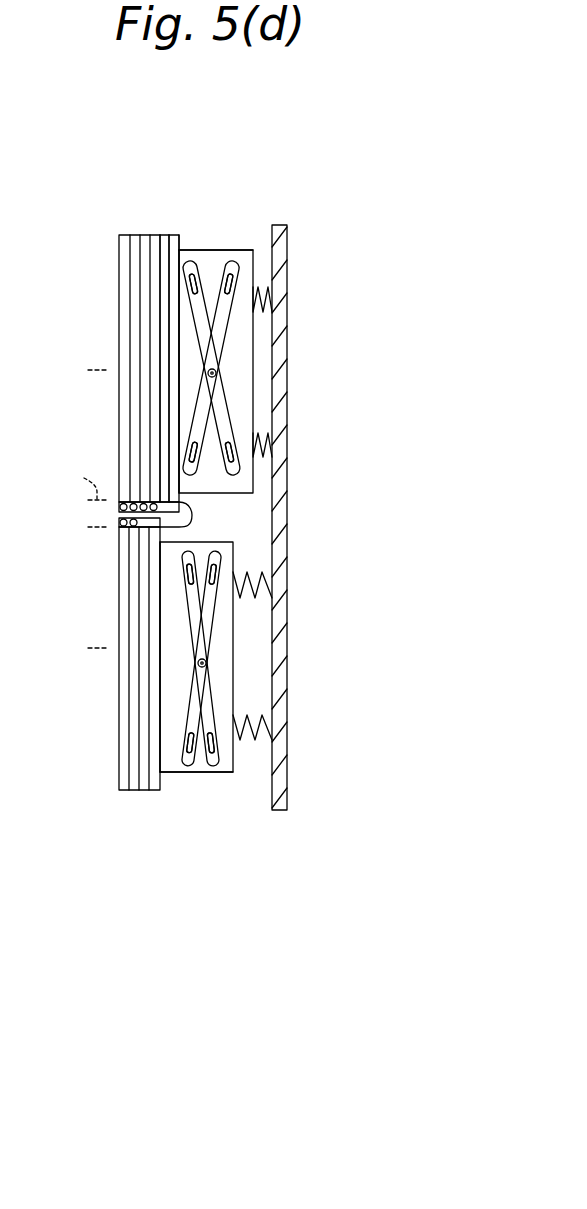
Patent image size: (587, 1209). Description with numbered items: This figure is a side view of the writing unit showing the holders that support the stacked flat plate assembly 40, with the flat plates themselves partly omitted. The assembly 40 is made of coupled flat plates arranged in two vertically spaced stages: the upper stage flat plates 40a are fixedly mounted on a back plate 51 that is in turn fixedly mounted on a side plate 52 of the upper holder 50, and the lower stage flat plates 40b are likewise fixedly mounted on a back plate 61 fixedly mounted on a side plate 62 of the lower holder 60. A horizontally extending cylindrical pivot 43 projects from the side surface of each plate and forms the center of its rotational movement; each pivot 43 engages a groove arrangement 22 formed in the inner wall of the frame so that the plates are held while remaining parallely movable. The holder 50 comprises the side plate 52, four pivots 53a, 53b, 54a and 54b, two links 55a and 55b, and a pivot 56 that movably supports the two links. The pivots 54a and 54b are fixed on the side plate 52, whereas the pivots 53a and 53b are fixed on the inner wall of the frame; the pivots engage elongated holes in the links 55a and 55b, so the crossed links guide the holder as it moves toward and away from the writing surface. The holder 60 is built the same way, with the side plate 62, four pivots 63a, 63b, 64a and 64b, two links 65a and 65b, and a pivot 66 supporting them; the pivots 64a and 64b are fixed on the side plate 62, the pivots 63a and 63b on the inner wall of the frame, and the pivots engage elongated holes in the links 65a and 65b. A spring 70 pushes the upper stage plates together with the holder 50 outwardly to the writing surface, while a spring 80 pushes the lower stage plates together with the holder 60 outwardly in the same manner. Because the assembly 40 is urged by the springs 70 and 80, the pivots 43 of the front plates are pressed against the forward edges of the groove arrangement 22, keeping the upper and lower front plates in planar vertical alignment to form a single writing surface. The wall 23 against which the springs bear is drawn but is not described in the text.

The groove arrangement 22 is at (82, 482).
The wall 23 is at (288, 326).
The stacked flat plate assembly 40 is at (121, 233).
The upper stage flat plates 40a is at (164, 233).
The lower stage flat plates 40b is at (130, 791).
The pivot 43 is at (118, 507).
The holder 50 is at (254, 399).
The back plate 51 is at (176, 248).
The side plate 52 is at (214, 250).
The pivot 53a is at (197, 262).
The pivot 53b is at (188, 468).
The pivot 54a is at (244, 262).
The pivot 54b is at (244, 484).
The link 55a is at (233, 268).
The link 55b is at (262, 278).
The pivot 56 is at (213, 373).
The holder 60 is at (234, 690).
The back plate 61 is at (158, 792).
The side plate 62 is at (200, 773).
The pivot 63a is at (190, 558).
The pivot 63b is at (182, 773).
The pivot 64a is at (235, 544).
The pivot 64b is at (225, 773).
The link 65a is at (190, 634).
The link 65b is at (226, 624).
The pivot 66 is at (206, 663).
The spring 70 is at (265, 287).
The spring 80 is at (262, 574).